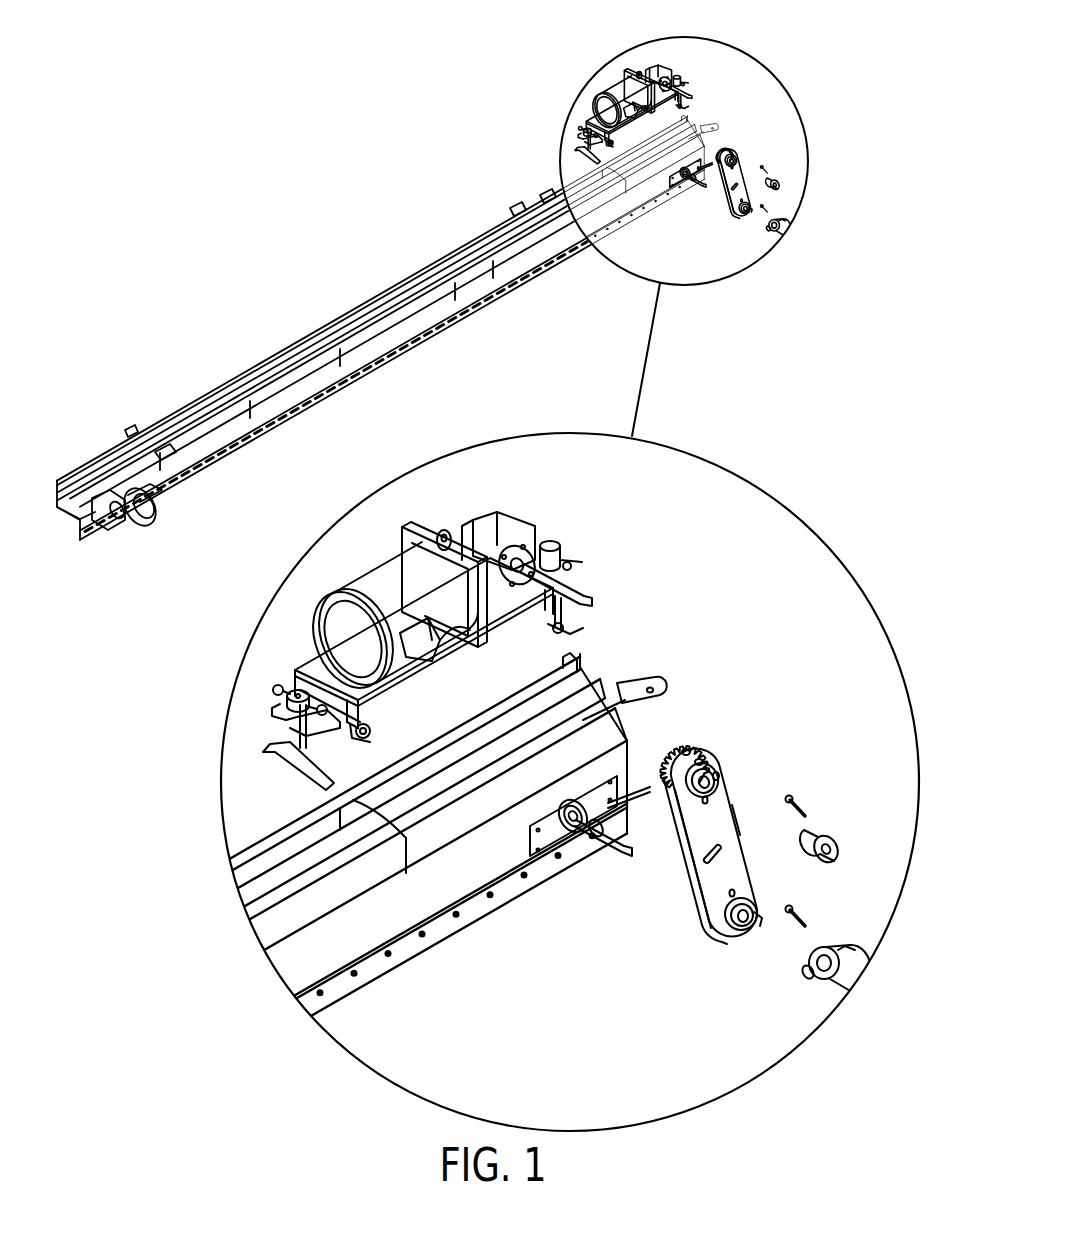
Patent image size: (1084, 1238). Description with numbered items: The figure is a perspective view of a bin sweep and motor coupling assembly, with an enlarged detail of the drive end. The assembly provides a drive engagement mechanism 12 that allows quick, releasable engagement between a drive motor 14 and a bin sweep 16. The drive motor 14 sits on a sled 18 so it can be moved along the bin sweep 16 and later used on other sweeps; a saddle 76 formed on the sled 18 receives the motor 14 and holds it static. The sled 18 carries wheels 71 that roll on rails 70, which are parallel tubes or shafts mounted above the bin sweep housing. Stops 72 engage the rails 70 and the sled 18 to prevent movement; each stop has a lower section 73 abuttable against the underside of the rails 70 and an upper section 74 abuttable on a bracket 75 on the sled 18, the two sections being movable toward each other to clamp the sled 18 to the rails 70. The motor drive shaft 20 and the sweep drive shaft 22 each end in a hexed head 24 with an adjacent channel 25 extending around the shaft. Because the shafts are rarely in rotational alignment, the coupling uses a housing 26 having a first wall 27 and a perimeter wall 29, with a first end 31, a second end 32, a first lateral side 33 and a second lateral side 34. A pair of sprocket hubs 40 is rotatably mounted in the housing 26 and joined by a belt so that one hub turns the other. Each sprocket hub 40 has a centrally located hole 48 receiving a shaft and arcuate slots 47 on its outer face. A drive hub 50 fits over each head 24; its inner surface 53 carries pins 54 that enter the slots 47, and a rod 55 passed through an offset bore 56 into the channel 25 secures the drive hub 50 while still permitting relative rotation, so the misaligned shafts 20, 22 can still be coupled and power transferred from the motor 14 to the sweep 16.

The drive engagement mechanism 12 is at (703, 944).
The drive motor 14 is at (385, 590).
The bin sweep 16 is at (290, 975).
The sled 18 is at (572, 642).
The motor drive shaft 20 is at (548, 555).
The sweep drive shaft 22 is at (580, 850).
The head 24 is at (600, 590).
The channel 25 is at (602, 872).
The housing 26 is at (712, 768).
The first wall 27 is at (730, 878).
The perimeter wall 29 is at (686, 745).
The first end 31 is at (698, 752).
The second end 32 is at (733, 942).
The first lateral side 33 is at (686, 842).
The second lateral side 34 is at (740, 805).
The sprocket hubs 40 is at (718, 776).
The slots 47 is at (755, 918).
The centrally located hole 48 is at (722, 792).
The drive hubs 50 is at (852, 1002).
The inner surface 53 is at (826, 838).
The pins 54 is at (805, 848).
The rod 55 is at (806, 918).
The bore 56 is at (850, 958).
The rails 70 is at (282, 838).
The wheels 71 is at (380, 738).
The stops 72 is at (300, 735).
The lower section 73 is at (270, 752).
The upper section 74 is at (290, 692).
The bracket 75 is at (282, 700).
The saddle 76 is at (413, 530).